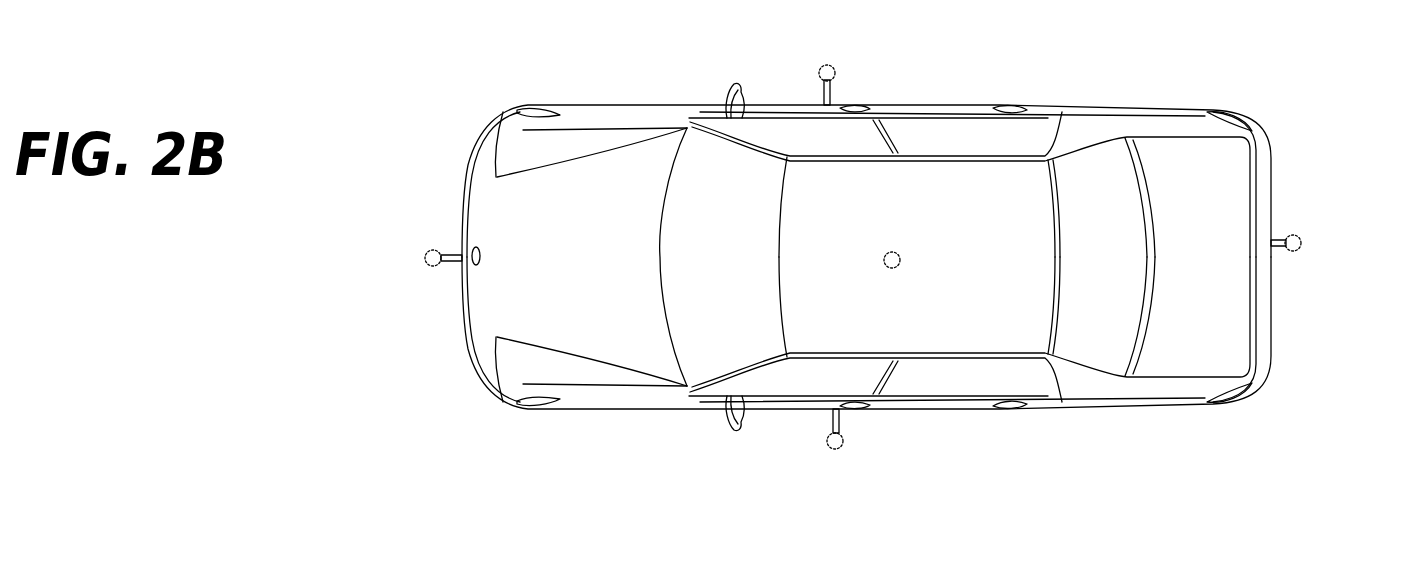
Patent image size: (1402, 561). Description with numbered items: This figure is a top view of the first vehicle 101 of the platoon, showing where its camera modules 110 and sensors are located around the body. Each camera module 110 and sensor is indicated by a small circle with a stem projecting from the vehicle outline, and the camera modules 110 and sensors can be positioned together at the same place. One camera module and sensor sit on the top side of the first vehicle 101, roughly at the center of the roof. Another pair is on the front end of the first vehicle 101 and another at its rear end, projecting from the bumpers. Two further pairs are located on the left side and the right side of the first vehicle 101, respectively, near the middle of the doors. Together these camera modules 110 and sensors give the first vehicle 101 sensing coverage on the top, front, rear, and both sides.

The first vehicle 101 is at (1186, 62).
The camera module 110 is at (831, 252).